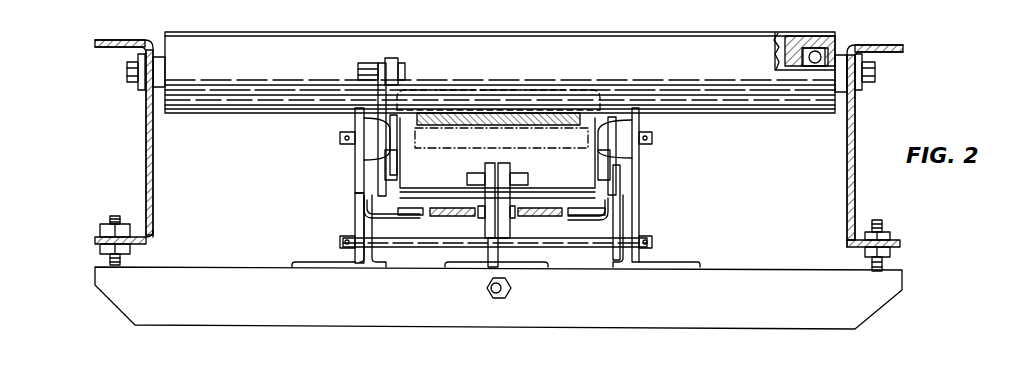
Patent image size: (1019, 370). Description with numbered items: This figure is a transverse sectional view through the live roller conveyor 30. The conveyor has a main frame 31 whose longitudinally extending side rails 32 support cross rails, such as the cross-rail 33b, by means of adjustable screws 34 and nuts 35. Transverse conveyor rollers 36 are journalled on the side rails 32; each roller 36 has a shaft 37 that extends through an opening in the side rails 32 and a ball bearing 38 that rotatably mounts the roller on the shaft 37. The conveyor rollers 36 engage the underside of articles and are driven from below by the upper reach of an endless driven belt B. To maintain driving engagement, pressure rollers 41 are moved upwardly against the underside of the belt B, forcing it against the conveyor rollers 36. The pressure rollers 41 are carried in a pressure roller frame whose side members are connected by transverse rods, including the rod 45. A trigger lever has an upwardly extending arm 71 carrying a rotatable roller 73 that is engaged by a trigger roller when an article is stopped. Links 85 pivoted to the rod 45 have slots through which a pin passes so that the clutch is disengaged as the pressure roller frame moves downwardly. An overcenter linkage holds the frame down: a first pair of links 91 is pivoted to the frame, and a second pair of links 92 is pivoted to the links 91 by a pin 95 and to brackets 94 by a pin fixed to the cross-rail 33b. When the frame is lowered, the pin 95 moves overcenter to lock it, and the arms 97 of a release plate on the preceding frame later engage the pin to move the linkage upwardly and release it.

The live roller conveyor 30 is at (878, 120).
The main frame 31 is at (855, 195).
The side rails 32 is at (145, 165).
The cross-rail 33b is at (748, 280).
The adjustable screws 34 is at (882, 224).
The nuts 35 is at (895, 252).
The conveyor rollers 36 is at (765, 44).
The shaft 37 is at (876, 72).
The ball bearing 38 is at (830, 55).
The pressure rollers 41 is at (441, 158).
The transverse rod 45 is at (580, 248).
The arm 71 is at (366, 95).
The roller 73 is at (390, 60).
The links 85 is at (355, 182).
The first pair of links 91 is at (497, 164).
The second pair of links 92 is at (470, 228).
The brackets 94 is at (460, 270).
The pin 95 is at (522, 178).
The arms 97 is at (437, 208).
The endless driven belt B is at (545, 112).